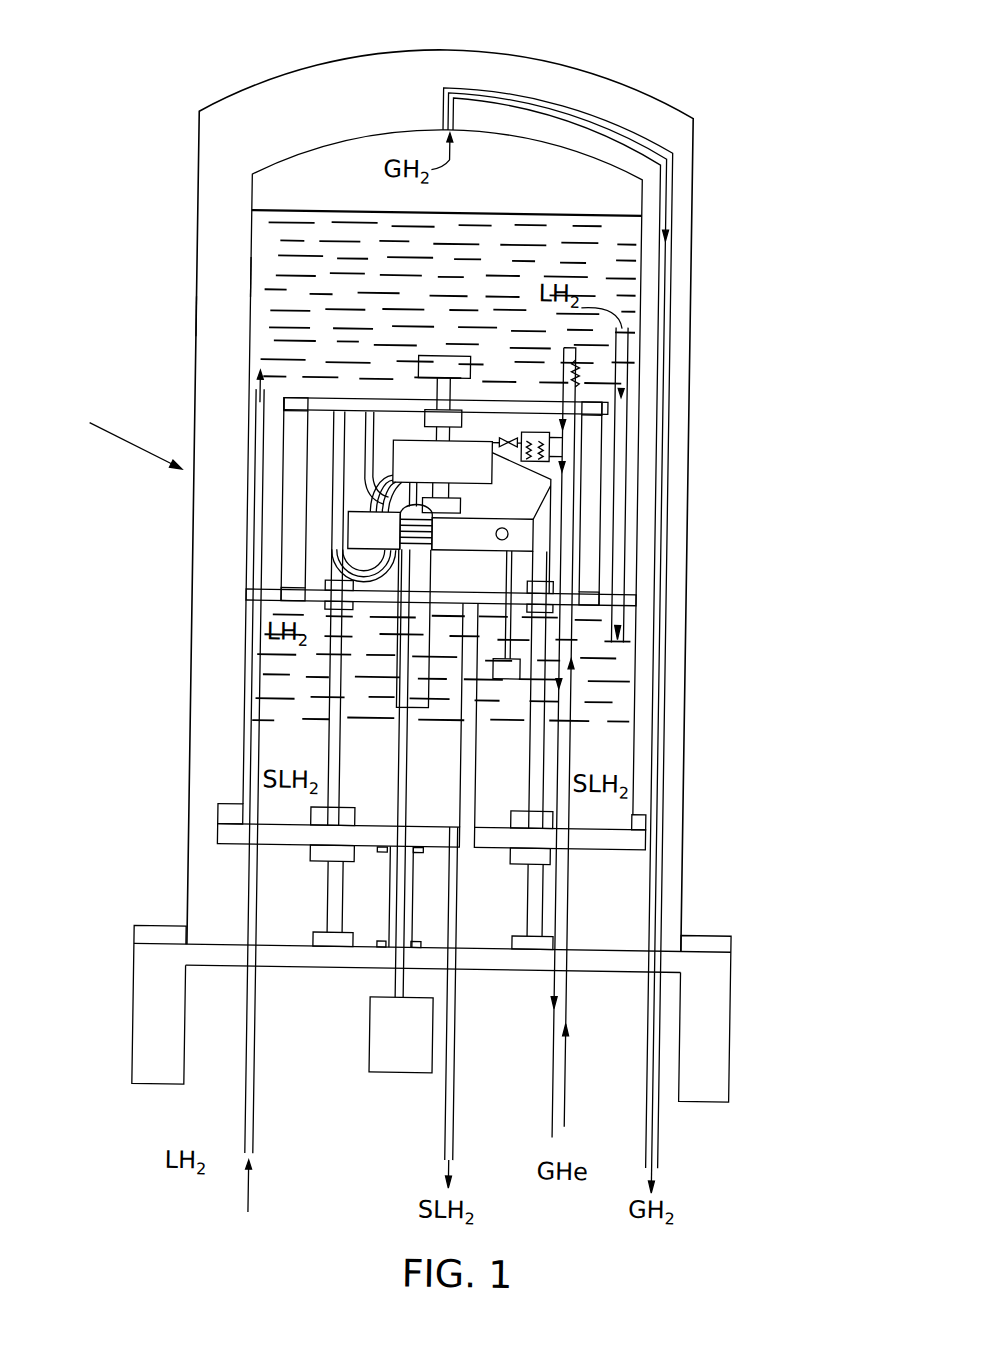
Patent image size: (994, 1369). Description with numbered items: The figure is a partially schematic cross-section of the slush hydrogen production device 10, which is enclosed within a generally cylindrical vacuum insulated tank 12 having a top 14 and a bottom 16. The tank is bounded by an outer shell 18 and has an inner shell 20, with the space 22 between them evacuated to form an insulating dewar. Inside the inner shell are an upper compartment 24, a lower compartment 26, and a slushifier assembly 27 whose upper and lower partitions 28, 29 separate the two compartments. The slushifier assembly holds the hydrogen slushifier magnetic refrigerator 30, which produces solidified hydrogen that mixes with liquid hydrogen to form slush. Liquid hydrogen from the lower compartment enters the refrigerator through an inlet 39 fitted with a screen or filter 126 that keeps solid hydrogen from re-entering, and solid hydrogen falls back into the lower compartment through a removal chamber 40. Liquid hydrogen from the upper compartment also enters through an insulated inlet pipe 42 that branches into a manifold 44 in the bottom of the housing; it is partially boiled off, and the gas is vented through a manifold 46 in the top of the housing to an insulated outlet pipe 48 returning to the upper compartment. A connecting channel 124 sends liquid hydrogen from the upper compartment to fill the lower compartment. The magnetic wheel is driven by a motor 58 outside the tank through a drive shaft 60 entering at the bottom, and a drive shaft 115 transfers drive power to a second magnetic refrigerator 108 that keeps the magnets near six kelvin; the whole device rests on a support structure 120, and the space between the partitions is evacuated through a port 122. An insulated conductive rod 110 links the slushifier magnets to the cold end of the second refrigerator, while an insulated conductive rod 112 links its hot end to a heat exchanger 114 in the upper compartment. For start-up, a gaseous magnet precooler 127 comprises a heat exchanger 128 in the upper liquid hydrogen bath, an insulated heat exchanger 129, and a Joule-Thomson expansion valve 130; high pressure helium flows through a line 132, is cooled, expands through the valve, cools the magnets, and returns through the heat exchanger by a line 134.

The slush hydrogen production device 10 is at (119, 434).
The vacuum insulated tank 12 is at (196, 357).
The top 14 is at (506, 54).
The bottom 16 is at (335, 970).
The outer shell 18 is at (196, 323).
The inner shell 20 is at (250, 285).
The space 22 is at (224, 243).
The upper compartment 24 is at (304, 250).
The lower compartment 26 is at (276, 698).
The slushifier assembly 27 is at (536, 533).
The upper partition 28 is at (328, 405).
The lower partition 29 is at (290, 610).
The hydrogen slushifier magnetic refrigerator 30 is at (374, 531).
The inlet 39 is at (482, 587).
The removal chamber 40 is at (436, 532).
The insulated inlet pipe 42 is at (393, 457).
The manifold 44 is at (342, 568).
The manifold 46 is at (380, 485).
The insulated outlet pipe 48 is at (370, 438).
The motor 58 is at (380, 1046).
The drive shaft 60 is at (404, 805).
The second magnetic refrigerator 108 is at (471, 516).
The insulated conductive rod 110 is at (460, 508).
The insulated conductive rod 112 is at (438, 396).
The heat exchanger 114 is at (452, 357).
The drive shaft 115 is at (377, 446).
The support structure 120 is at (552, 488).
The port 122 is at (468, 793).
The connecting channel 124 is at (629, 485).
The screen or filter 126 is at (502, 680).
The gaseous magnet precooler 127 is at (538, 431).
The heat exchanger 128 is at (578, 370).
The heat exchanger 129 is at (515, 437).
The Joule-Thomson expansion valve 130 is at (502, 440).
The line 132 is at (575, 557).
The line 134 is at (562, 626).